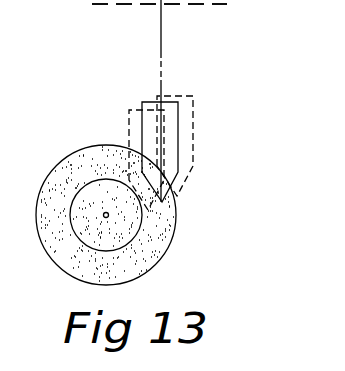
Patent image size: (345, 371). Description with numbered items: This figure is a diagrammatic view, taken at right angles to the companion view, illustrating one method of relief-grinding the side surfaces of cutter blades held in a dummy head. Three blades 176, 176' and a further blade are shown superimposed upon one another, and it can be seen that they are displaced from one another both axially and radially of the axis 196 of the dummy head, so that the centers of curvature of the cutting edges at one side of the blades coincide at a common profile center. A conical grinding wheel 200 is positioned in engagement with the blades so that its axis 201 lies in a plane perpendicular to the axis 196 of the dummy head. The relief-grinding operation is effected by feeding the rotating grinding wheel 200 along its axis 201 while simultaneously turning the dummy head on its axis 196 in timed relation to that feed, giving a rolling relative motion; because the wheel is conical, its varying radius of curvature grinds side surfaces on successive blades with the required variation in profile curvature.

The axis of the dummy head 196 is at (203, 8).
The blade 176 is at (121, 160).
The blade 176' is at (191, 152).
The conical grinding wheel 200 is at (63, 262).
The axis of the grinding wheel 201 is at (107, 216).